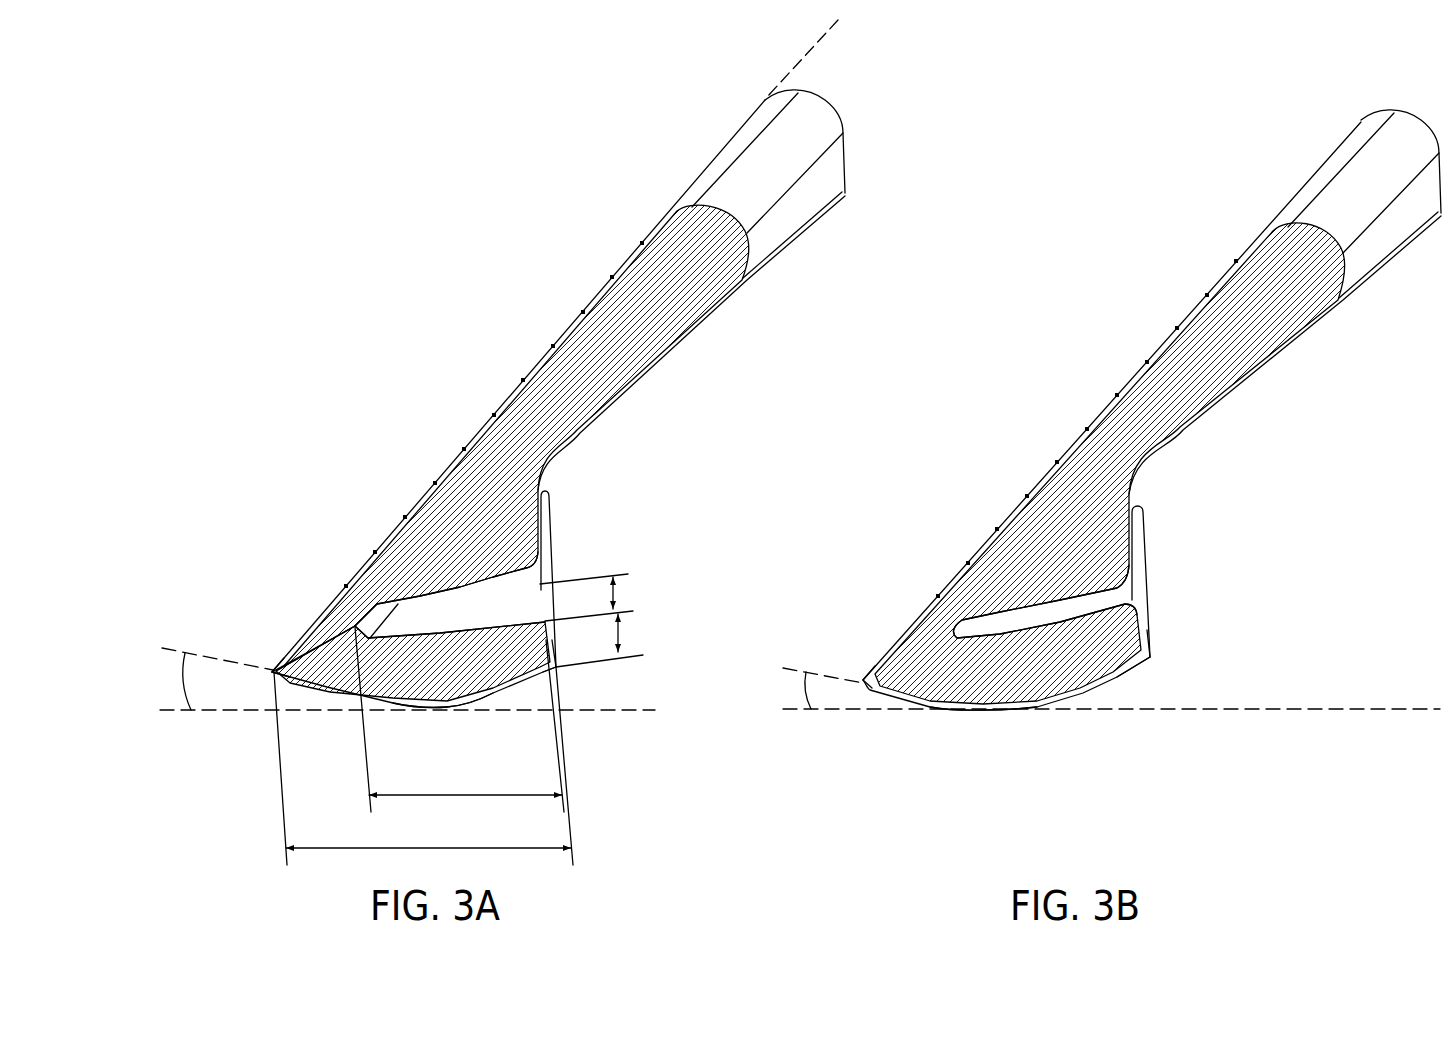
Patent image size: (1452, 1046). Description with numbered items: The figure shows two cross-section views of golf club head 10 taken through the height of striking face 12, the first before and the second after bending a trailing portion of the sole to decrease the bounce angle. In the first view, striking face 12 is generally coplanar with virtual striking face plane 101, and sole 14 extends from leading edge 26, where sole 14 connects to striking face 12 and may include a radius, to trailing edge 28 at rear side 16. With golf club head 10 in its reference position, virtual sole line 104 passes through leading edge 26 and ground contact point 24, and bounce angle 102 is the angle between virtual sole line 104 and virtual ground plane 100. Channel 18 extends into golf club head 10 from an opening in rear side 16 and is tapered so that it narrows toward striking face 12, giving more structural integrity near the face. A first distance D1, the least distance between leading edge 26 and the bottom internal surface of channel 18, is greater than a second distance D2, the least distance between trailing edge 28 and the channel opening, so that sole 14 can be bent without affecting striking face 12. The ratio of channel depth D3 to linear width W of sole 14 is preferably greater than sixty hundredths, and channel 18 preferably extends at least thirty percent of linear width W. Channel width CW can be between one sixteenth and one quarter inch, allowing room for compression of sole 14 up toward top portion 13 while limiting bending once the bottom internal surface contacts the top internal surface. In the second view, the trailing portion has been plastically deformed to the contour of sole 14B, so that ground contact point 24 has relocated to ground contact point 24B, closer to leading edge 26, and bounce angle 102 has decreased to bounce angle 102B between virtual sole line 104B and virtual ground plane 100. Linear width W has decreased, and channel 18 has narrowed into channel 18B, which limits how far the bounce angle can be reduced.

In FIG. 3A, the golf club head 10 is at (580, 220).
In FIG. 3B, the golf club head 10 is at (1175, 280).
In FIG. 3A, the striking face 12 is at (435, 470).
In FIG. 3B, the striking face 12 is at (1030, 500).
In FIG. 3A, the top portion 13 is at (825, 112).
In FIG. 3B, the top portion 13 is at (1405, 135).
In FIG. 3A, the sole 14 is at (305, 689).
In FIG. 3B, the sole 14B is at (1118, 675).
In FIG. 3A, the rear side 16 is at (551, 503).
In FIG. 3B, the rear side 16 is at (1144, 513).
In FIG. 3A, the channel 18 is at (580, 547).
In FIG. 3B, the channel 18B is at (1134, 584).
In FIG. 3A, the ground contact point 24 is at (430, 708).
In FIG. 3B, the ground contact point 24B is at (948, 708).
In FIG. 3A, the leading edge 26 is at (271, 667).
In FIG. 3B, the leading edge 26 is at (862, 680).
In FIG. 3A, the trailing edge 28 is at (557, 668).
In FIG. 3B, the trailing edge 28 is at (1150, 656).
In FIG. 3A, the virtual ground plane 100 is at (212, 712).
In FIG. 3B, the virtual ground plane 100 is at (1243, 712).
In FIG. 3A, the virtual striking face plane 101 is at (792, 70).
In FIG. 3A, the bounce angle 102 is at (176, 683).
In FIG. 3B, the bounce angle 102B is at (797, 690).
In FIG. 3A, the virtual sole line 104 is at (215, 658).
In FIG. 3B, the virtual sole line 104B is at (812, 672).
In FIG. 3A, the first distance D1 is at (320, 648).
In FIG. 3A, the second distance D2 is at (610, 639).
In FIG. 3A, the depth of channel D3 is at (459, 729).
In FIG. 3A, the channel width CW is at (602, 596).
In FIG. 3A, the linear width of sole W is at (433, 850).